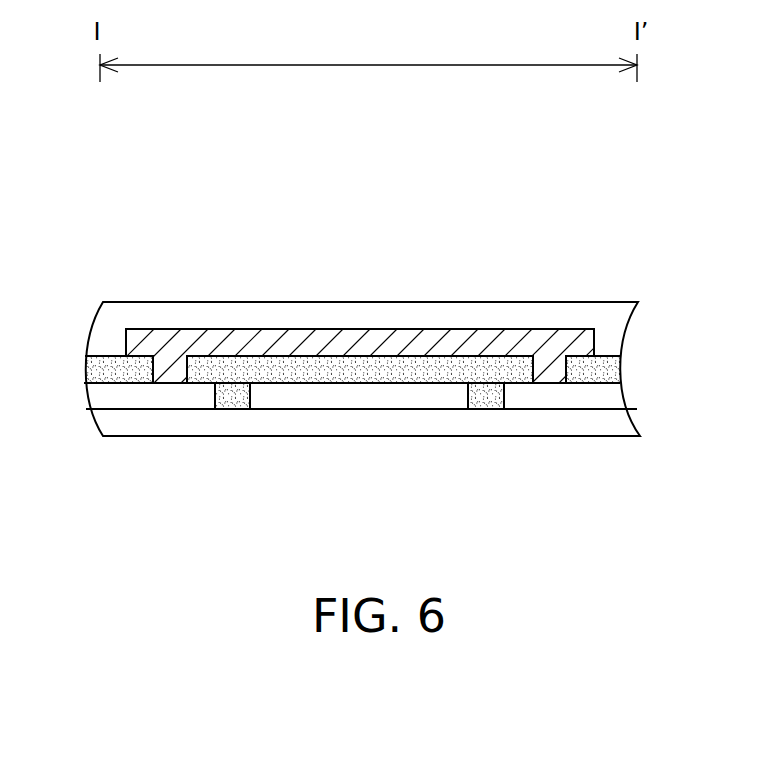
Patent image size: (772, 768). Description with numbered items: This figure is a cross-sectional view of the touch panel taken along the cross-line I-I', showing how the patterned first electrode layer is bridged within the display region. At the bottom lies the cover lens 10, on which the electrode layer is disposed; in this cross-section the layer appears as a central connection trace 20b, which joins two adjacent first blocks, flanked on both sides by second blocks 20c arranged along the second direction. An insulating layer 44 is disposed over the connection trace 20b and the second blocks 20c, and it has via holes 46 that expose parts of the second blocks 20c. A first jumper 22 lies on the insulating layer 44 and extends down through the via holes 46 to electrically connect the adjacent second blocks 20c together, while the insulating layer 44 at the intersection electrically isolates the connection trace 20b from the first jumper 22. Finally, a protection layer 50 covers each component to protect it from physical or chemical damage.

The cover lens 10 is at (623, 420).
The connection traces 20b is at (357, 400).
The second blocks 20c is at (172, 402).
The first jumper 22 is at (572, 348).
The insulating layer 44 is at (237, 398).
The via holes 46 is at (150, 378).
The protection layer 50 is at (627, 316).